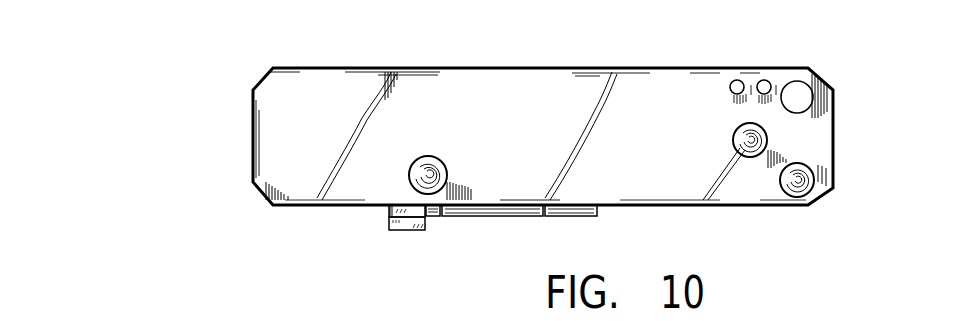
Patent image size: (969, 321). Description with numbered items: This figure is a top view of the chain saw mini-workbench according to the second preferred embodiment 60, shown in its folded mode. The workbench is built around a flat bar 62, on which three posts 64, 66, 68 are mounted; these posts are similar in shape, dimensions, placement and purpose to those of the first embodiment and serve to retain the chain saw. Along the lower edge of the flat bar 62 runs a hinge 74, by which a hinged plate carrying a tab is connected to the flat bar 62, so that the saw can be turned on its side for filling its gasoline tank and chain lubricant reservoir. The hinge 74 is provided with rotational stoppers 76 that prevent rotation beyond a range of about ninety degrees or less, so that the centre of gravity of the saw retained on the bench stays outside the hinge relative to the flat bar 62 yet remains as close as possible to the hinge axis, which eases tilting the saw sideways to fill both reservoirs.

The chain saw mini-workbench according to the second preferred embodiment 60 is at (128, 53).
The flat bar 62 is at (330, 68).
The post 64 is at (807, 201).
The post 66 is at (433, 156).
The post 68 is at (738, 126).
The hinge 74 is at (508, 216).
The rotational stoppers 76 is at (389, 215).